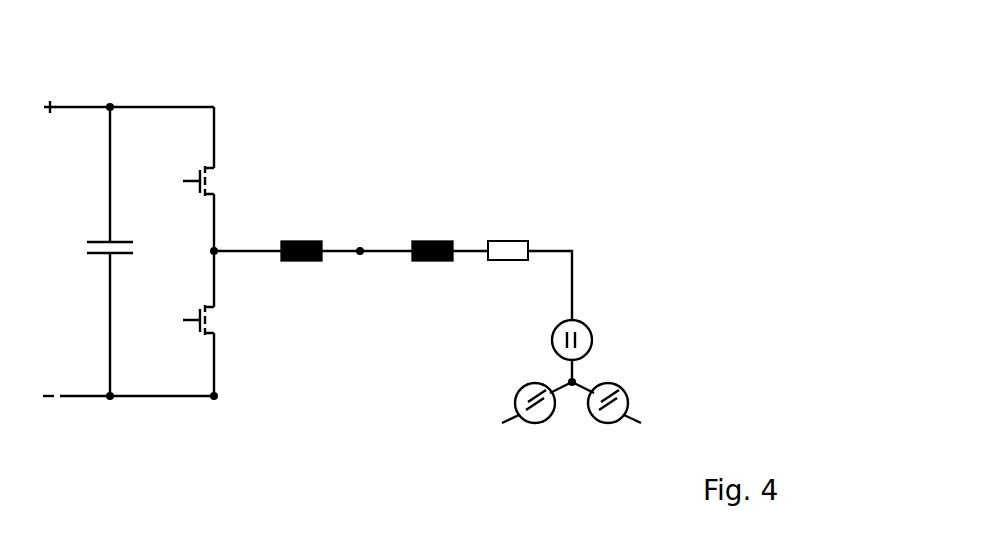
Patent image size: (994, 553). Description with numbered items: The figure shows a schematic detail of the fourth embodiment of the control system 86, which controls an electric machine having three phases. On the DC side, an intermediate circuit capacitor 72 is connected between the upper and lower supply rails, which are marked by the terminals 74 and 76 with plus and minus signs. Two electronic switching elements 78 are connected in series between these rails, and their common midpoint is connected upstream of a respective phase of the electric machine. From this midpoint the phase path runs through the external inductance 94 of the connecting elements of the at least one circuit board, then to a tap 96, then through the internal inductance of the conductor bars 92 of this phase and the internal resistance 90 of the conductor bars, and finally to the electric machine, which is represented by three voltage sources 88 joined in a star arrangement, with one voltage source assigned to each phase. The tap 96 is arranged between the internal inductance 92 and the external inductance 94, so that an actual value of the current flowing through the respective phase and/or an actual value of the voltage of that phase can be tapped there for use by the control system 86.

The intermediate circuit capacitor 72 is at (88, 247).
The positive DC terminal 74 is at (110, 107).
The negative DC terminal 76 is at (110, 396).
The electronic switching elements 78 is at (208, 181).
The control system 86 is at (585, 190).
The voltage sources 88 is at (591, 332).
The internal resistance 90 is at (508, 241).
The internal inductance of the conductor bars 92 is at (432, 241).
The external inductance 94 is at (301, 241).
The tap 96 is at (359, 247).